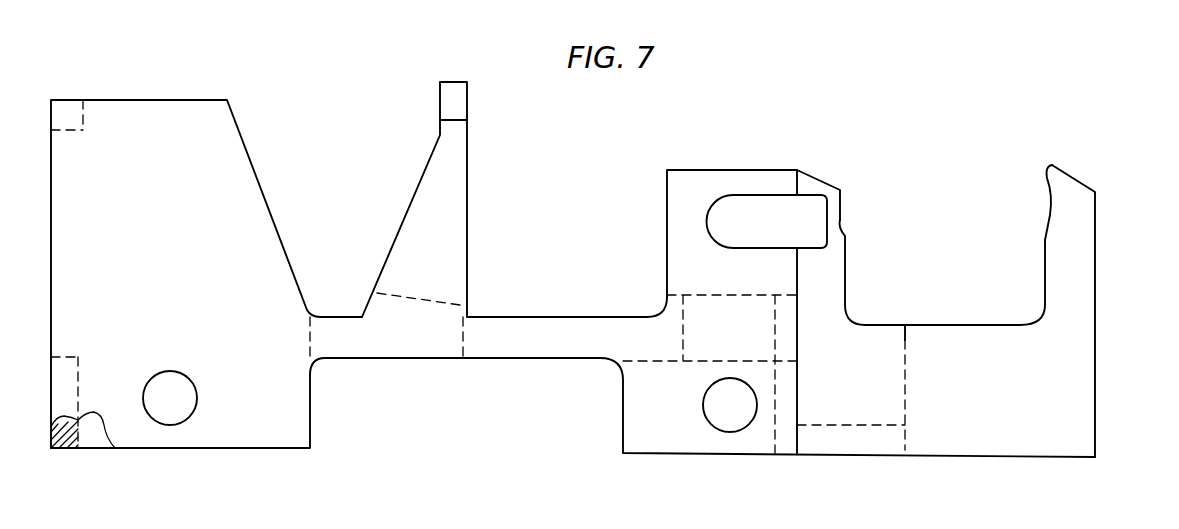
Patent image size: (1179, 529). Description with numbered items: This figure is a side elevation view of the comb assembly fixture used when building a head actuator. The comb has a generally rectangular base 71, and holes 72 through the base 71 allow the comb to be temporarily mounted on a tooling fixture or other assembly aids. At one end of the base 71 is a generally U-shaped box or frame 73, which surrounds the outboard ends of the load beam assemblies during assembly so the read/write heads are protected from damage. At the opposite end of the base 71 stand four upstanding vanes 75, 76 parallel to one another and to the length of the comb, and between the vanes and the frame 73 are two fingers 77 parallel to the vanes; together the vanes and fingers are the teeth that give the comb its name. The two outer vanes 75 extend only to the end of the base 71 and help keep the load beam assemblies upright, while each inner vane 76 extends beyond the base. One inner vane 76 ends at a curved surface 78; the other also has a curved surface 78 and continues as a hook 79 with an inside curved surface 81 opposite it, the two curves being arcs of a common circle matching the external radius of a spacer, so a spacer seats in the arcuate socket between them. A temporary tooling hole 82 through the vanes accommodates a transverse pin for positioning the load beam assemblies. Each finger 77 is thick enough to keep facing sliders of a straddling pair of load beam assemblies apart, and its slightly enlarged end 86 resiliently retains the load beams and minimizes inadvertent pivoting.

The base 71 is at (288, 452).
The holes 72 is at (185, 377).
The U-shaped box or frame 73 is at (142, 110).
The outer vanes 75 is at (781, 170).
The inner vanes 76 is at (828, 182).
The fingers 77 is at (458, 152).
The curved surface 78 is at (844, 219).
The hook 79 is at (1087, 310).
The inside curved surface 81 is at (1050, 192).
The temporary tooling hole 82 is at (718, 193).
The enlarged ends of fingers 86 is at (443, 100).